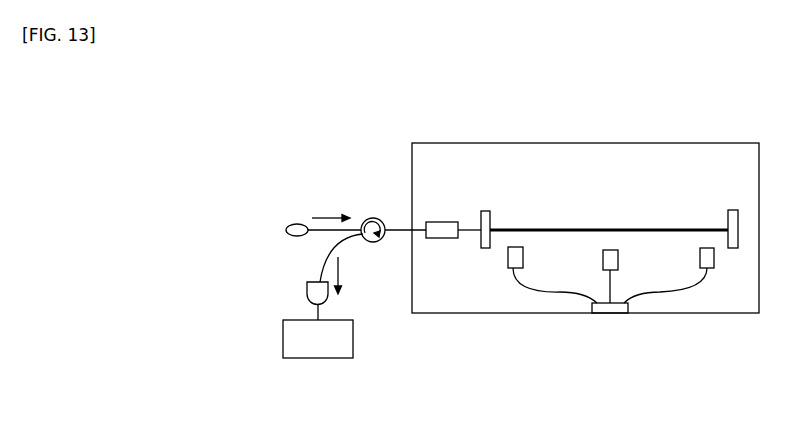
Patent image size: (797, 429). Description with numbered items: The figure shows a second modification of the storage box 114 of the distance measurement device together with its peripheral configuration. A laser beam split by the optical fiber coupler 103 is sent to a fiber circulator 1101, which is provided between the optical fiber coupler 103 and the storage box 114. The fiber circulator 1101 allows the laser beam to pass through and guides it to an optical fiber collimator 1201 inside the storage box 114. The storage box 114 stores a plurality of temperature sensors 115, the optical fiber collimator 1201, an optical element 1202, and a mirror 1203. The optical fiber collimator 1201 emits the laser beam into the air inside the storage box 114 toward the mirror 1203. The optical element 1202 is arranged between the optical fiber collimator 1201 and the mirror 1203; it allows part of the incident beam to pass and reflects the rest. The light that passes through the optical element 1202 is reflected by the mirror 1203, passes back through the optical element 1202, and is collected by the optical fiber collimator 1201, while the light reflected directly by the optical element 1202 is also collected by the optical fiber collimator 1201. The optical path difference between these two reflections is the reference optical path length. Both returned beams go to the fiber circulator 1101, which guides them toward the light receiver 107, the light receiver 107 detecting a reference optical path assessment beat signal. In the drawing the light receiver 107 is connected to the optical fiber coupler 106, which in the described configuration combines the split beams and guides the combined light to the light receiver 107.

The storage box 114 is at (446, 118).
The optical fiber coupler 103 is at (295, 224).
The fiber circulator 1101 is at (377, 217).
The optical fiber collimator 1201 is at (437, 217).
The optical element 1202 is at (491, 217).
The mirror 1203 is at (734, 209).
The temperature sensors 115 is at (523, 255).
The light receiver 107 is at (308, 290).
The optical fiber coupler 106 is at (311, 353).